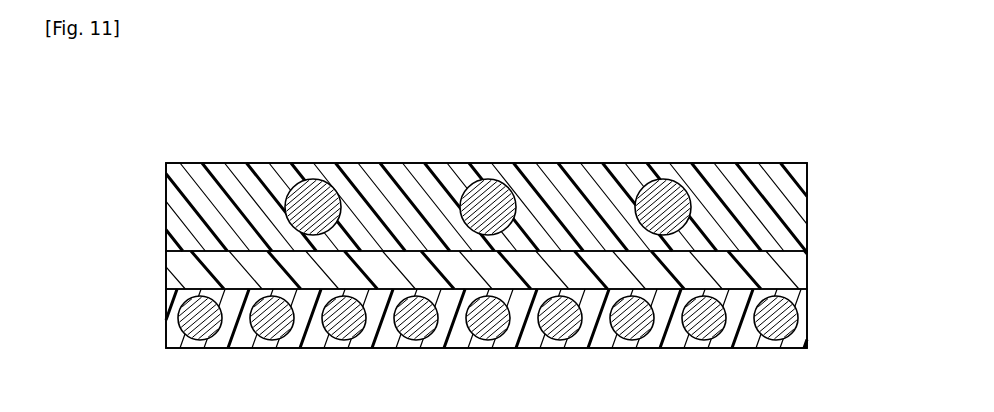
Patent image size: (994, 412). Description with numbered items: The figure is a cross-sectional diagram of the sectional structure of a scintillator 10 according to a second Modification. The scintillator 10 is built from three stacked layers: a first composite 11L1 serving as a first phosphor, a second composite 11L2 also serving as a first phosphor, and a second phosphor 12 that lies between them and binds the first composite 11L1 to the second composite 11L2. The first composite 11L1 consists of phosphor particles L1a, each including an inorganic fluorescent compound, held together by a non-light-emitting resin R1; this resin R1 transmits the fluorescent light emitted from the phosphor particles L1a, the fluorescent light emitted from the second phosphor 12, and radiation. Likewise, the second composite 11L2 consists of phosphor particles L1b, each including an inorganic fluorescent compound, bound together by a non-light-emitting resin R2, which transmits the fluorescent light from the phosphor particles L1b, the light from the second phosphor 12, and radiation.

The scintillator 10 is at (799, 118).
The first composite 11L1 is at (159, 319).
The second composite 11L2 is at (159, 198).
The second phosphor 12 is at (808, 267).
The non-light-emitting resin R1 is at (808, 318).
The non-light-emitting resin R2 is at (808, 203).
The phosphor particles L1a is at (200, 341).
The phosphor particles L1b is at (314, 181).